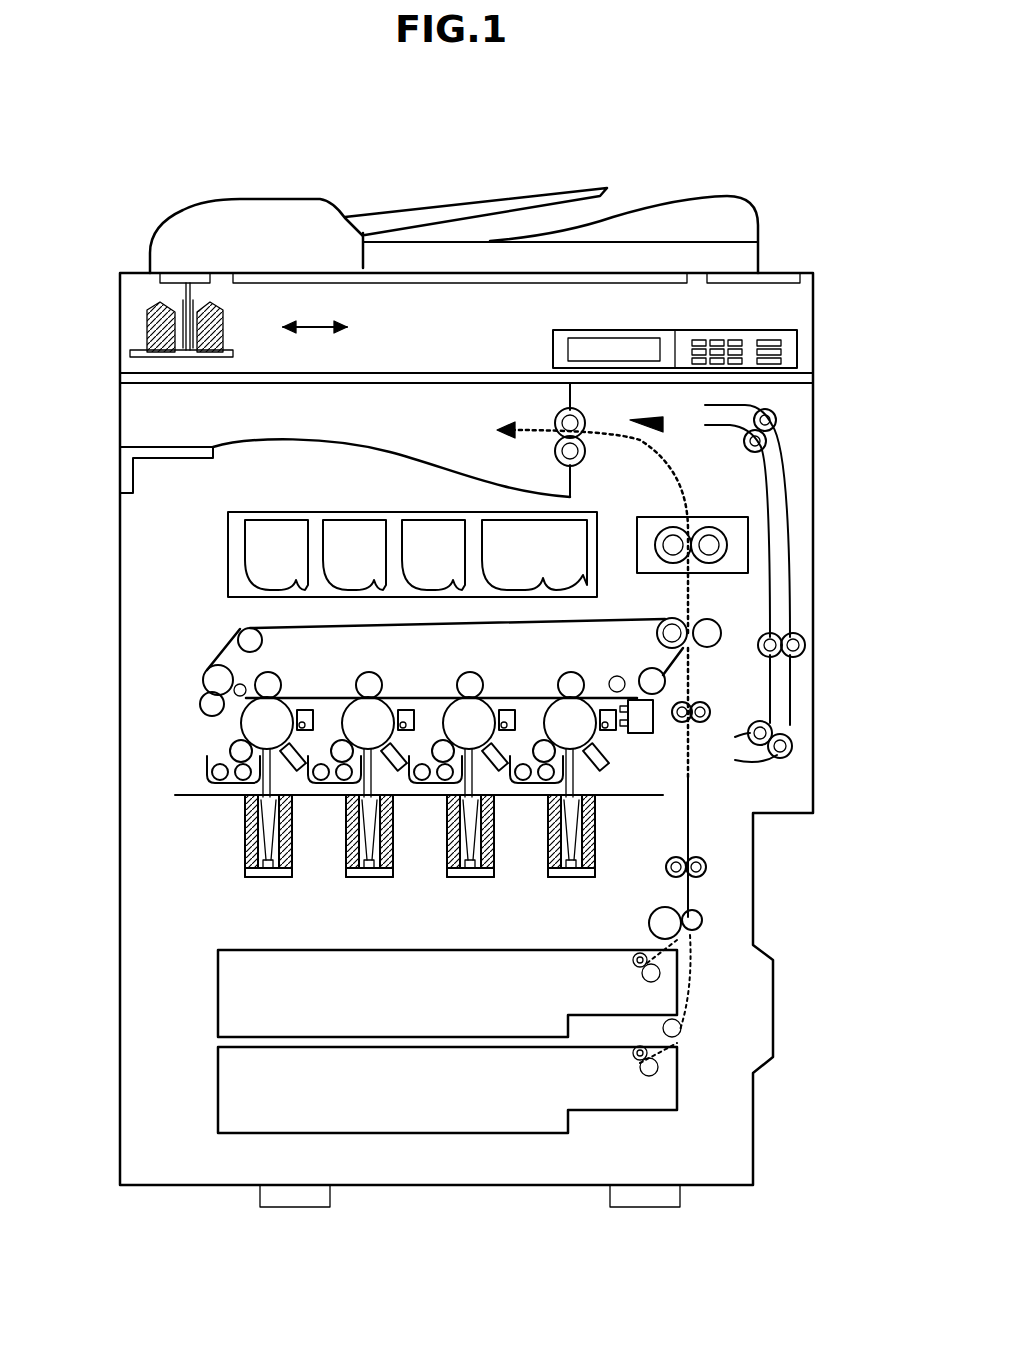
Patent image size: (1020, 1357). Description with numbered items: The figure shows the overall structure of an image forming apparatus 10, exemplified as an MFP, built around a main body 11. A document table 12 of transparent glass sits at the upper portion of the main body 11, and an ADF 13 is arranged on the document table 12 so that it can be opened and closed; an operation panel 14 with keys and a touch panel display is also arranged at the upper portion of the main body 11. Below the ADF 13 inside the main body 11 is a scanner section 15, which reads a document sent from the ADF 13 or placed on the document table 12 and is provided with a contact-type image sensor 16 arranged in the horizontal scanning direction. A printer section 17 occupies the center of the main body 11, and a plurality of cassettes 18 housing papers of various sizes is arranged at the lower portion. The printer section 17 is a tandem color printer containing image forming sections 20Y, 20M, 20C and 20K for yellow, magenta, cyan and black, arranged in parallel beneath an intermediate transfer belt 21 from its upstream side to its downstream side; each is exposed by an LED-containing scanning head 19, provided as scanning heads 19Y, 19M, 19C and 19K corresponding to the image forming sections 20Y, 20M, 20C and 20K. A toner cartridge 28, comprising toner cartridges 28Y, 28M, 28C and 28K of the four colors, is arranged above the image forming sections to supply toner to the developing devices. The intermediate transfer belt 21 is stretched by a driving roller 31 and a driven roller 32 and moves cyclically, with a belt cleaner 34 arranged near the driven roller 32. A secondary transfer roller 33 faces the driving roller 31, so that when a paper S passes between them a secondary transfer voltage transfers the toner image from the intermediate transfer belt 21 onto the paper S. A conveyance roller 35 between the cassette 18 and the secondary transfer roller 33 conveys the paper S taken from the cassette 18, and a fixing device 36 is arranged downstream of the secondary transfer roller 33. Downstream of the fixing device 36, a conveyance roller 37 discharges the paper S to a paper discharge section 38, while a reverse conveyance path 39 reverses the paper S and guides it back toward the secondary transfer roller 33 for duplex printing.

The image forming apparatus 10 is at (676, 180).
The main body 11 is at (120, 1030).
The document table 12 is at (470, 273).
The ADF (automatic document feeder) 13 is at (203, 233).
The operation panel 14 is at (798, 355).
The scanner section 15 is at (395, 313).
The image sensor 16 is at (147, 333).
The printer section 17 is at (140, 795).
The cassette 18 is at (473, 960).
The scanning head 19 is at (222, 832).
The scanning head 19Y is at (247, 853).
The scanning head 19M is at (347, 855).
The scanning head 19C is at (448, 855).
The scanning head 19K is at (548, 858).
The image forming section 20Y is at (230, 730).
The image forming section 20M is at (338, 728).
The image forming section 20C is at (438, 728).
The image forming section 20K is at (540, 725).
The intermediate transfer belt 21 is at (465, 630).
The toner cartridge 28 is at (227, 563).
The toner cartridge 28Y is at (276, 555).
The toner cartridge 28M is at (354, 555).
The toner cartridge 28C is at (433, 555).
The toner cartridge 28K is at (534, 555).
The driving roller 31 is at (668, 620).
The driven roller 32 is at (207, 672).
The secondary transfer roller 33 is at (708, 620).
The belt cleaner 34 is at (207, 702).
The conveyance roller 35 is at (694, 860).
The fixing device 36 is at (700, 517).
The conveyance roller 37 is at (584, 457).
The paper discharge section 38 is at (440, 455).
The reverse conveyance path 39 is at (797, 523).
The paper S is at (693, 890).